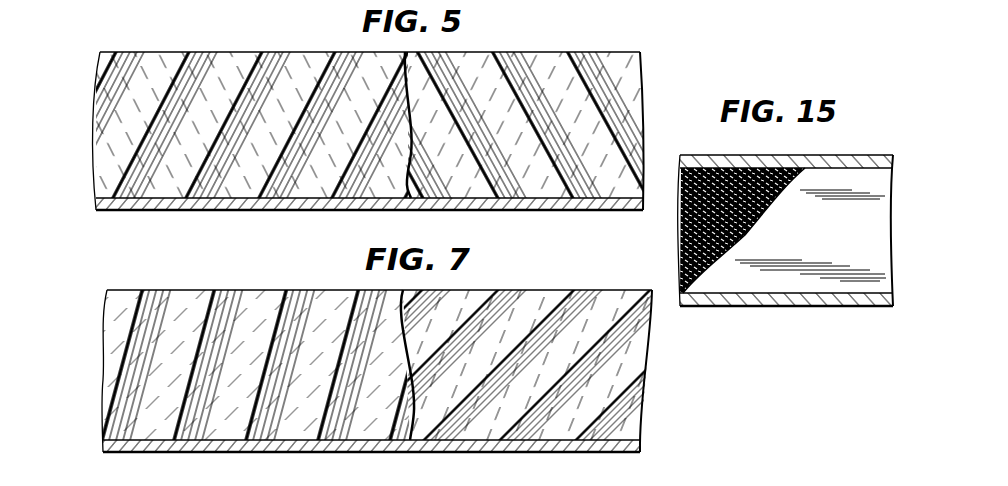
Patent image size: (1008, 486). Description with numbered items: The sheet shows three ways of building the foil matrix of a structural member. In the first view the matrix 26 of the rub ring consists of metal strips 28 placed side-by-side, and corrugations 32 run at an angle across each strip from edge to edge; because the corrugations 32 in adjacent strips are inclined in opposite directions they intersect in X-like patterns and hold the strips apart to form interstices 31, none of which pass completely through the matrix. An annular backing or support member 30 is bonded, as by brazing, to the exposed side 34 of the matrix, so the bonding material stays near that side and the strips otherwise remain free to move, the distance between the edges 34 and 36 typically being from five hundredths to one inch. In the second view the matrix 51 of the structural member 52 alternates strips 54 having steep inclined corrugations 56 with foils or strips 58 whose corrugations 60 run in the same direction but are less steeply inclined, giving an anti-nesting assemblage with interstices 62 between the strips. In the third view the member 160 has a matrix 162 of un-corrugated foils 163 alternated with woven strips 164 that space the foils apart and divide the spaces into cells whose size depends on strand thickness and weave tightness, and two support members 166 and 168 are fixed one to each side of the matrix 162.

In FIG. 5, the matrix 26 is at (170, 45).
In FIG. 5, the metal strips 28 is at (238, 52).
In FIG. 5, the backing or support member 30 is at (167, 206).
In FIG. 5, the interstices 31 is at (101, 147).
In FIG. 5, the corrugations 32 is at (183, 117).
In FIG. 5, the exposed side 34 is at (543, 199).
In FIG. 5, the edge 36 is at (294, 52).
In FIG. 7, the matrix 51 is at (228, 280).
In FIG. 7, the structural member 52 is at (82, 323).
In FIG. 7, the strips 54 is at (298, 290).
In FIG. 7, the inclined corrugations 56 is at (213, 290).
In FIG. 7, the foils or strips 58 is at (572, 290).
In FIG. 7, the corrugations 60 is at (613, 350).
In FIG. 7, the interstices 62 is at (297, 417).
In FIG. 15, the structural member 160 is at (664, 245).
In FIG. 15, the matrix 162 is at (833, 146).
In FIG. 15, the un-corrugated foils 163 is at (845, 185).
In FIG. 15, the woven strips 164 is at (679, 221).
In FIG. 15, the support member 166 is at (715, 155).
In FIG. 15, the support member 168 is at (750, 298).